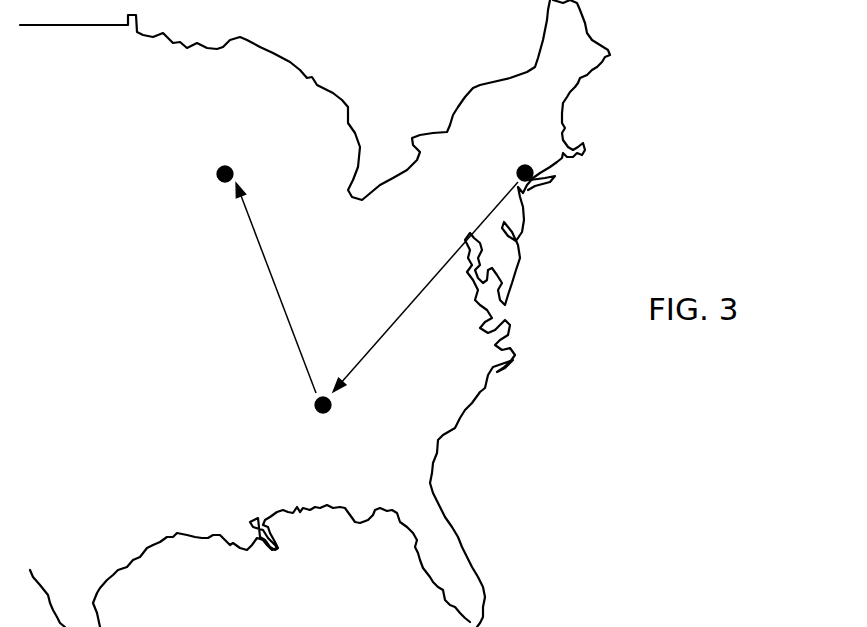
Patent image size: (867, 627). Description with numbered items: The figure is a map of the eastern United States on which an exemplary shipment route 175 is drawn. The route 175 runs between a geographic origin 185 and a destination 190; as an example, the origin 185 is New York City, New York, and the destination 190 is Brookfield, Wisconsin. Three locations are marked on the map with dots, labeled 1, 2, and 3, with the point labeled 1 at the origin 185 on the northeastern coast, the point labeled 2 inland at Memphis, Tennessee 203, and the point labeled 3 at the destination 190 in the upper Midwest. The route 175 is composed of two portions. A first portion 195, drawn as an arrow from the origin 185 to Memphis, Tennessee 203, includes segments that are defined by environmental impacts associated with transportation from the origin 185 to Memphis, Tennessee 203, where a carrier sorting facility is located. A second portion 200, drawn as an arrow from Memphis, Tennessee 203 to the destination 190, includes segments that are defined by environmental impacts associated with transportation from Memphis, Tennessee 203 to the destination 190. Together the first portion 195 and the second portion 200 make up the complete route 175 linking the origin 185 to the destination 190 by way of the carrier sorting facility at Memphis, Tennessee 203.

The first node location 1 is at (523, 150).
The second node location 2 is at (332, 425).
The third node location 3 is at (227, 156).
The first exemplary shipment route 175 is at (347, 300).
The geographic origin 185 is at (565, 209).
The destination 190 is at (195, 176).
The first portion 195 is at (395, 327).
The second portion 200 is at (277, 298).
The Memphis, Tenn. 203 is at (314, 415).